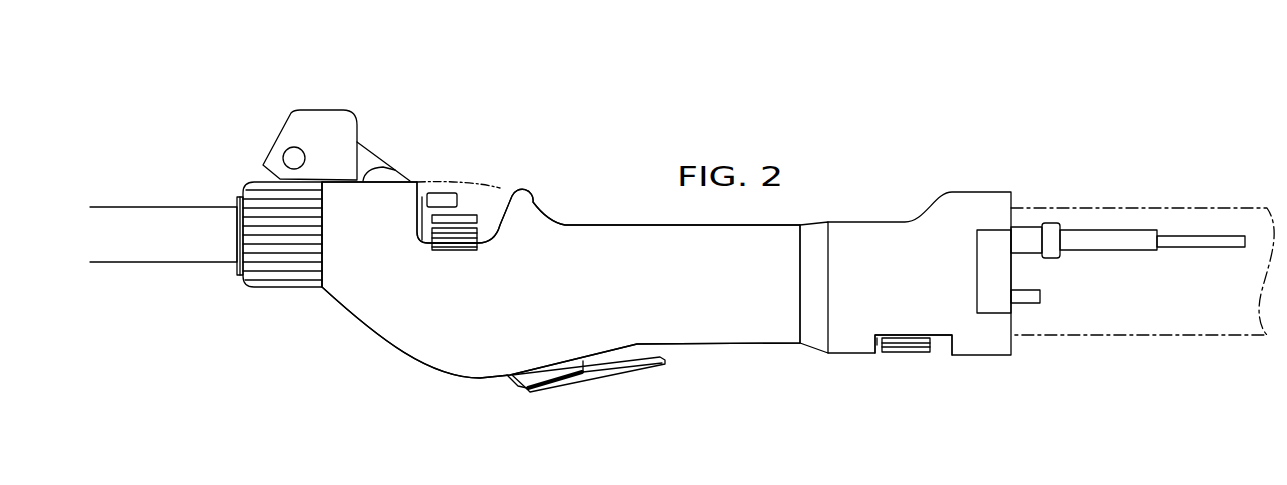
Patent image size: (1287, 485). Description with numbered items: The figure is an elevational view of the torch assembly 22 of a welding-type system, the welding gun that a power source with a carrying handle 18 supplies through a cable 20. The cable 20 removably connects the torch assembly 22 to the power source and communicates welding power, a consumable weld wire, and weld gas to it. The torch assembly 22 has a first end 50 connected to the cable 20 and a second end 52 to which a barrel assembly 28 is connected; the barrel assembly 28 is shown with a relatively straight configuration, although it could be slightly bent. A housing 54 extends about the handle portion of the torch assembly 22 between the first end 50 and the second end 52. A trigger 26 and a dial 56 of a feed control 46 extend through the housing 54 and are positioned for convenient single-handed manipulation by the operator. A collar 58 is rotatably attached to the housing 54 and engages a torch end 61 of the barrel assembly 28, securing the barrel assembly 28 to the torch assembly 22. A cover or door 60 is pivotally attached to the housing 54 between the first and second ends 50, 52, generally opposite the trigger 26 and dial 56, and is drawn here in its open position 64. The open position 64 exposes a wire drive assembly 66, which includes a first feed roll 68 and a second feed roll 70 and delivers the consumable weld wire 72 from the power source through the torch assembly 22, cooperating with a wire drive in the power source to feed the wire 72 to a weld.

The handle 18 is at (623, 193).
The cable 20 is at (1193, 218).
The torch assembly 22 is at (743, 105).
The trigger 26 is at (590, 377).
The barrel assembly 28 is at (120, 185).
The feed control 46 is at (893, 380).
The first end 50 is at (980, 177).
The second end 52 is at (277, 209).
The housing 54 is at (848, 235).
The dial 56 is at (915, 353).
The collar 58 is at (270, 270).
The door 60 is at (336, 99).
The torch end 61 is at (215, 213).
The open position 64 is at (318, 103).
The wire drive assembly 66 is at (472, 168).
The first feed roll 68 is at (450, 271).
The second feed roll 70 is at (468, 213).
The consumable weld wire 72 is at (430, 247).